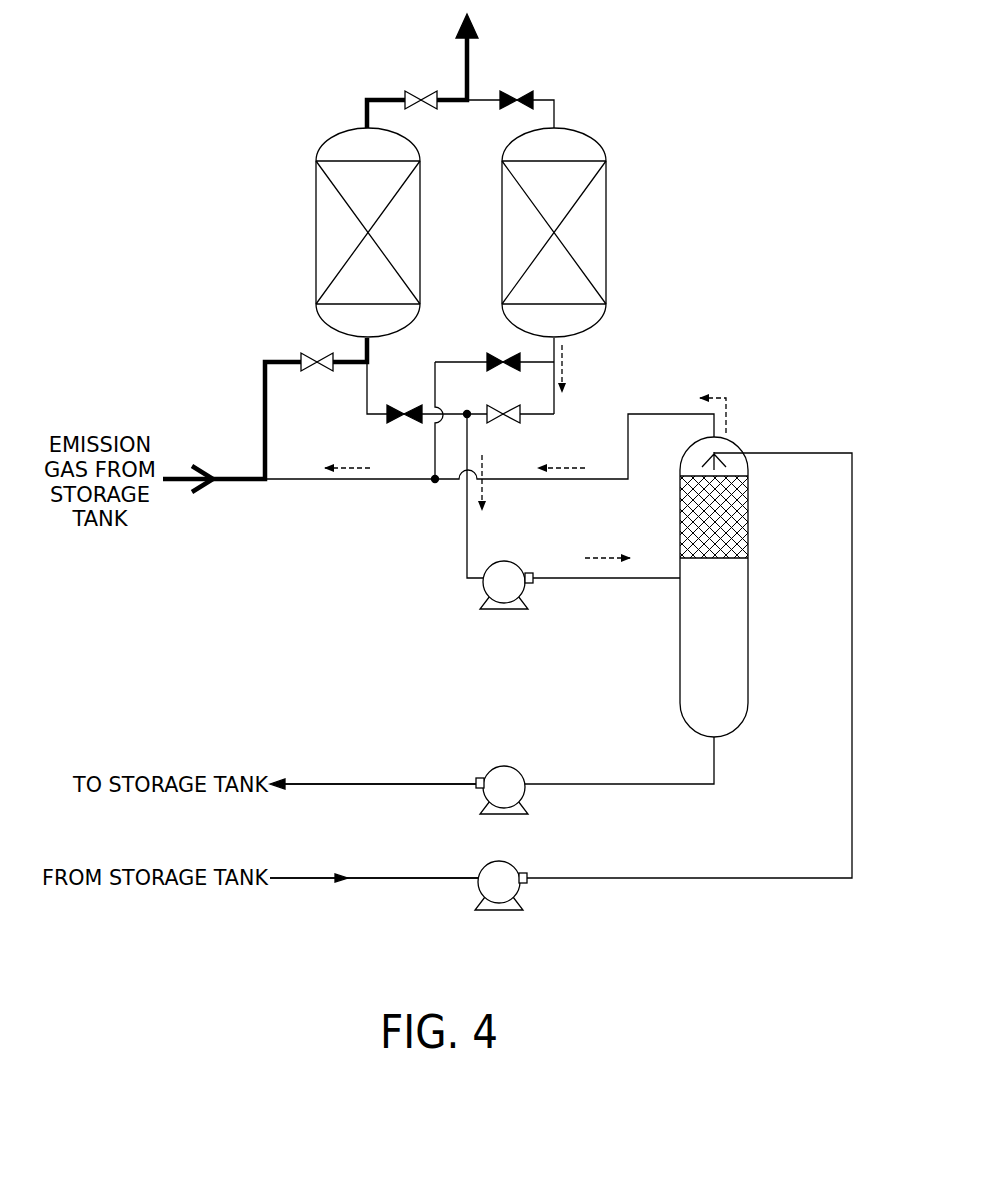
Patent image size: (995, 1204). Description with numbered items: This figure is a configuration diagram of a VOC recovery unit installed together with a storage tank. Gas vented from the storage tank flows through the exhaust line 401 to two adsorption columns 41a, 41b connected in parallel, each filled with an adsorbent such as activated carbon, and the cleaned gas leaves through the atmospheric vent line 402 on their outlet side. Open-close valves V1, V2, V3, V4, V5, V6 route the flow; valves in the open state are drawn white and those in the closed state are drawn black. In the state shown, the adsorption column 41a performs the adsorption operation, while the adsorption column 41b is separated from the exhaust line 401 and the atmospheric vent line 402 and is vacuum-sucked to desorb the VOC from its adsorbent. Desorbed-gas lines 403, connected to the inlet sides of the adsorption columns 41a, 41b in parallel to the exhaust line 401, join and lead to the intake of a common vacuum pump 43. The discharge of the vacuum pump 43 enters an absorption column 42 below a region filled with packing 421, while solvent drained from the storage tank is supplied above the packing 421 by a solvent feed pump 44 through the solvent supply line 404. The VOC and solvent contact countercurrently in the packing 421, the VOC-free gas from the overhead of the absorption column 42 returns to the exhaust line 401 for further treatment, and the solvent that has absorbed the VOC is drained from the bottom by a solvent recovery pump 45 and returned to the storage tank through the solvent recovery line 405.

The exhaust line 401 is at (305, 481).
The atmospheric vent line 402 is at (470, 52).
The desorbed-gas line 403 is at (467, 538).
The solvent supply line 404 is at (413, 880).
The solvent recovery line 405 is at (413, 776).
The adsorption column 41a is at (316, 208).
The adsorption column 41b is at (607, 203).
The absorption column 42 is at (749, 633).
The packing 421 is at (750, 525).
The vacuum pump 43 is at (510, 560).
The solvent feed pump 44 is at (515, 864).
The solvent recovery pump 45 is at (513, 766).
The open-close valve V1 is at (307, 352).
The open-close valve V2 is at (495, 352).
The open-close valve V3 is at (412, 92).
The open-close valve V4 is at (522, 92).
The open-close valve V5 is at (412, 405).
The open-close valve V6 is at (490, 405).